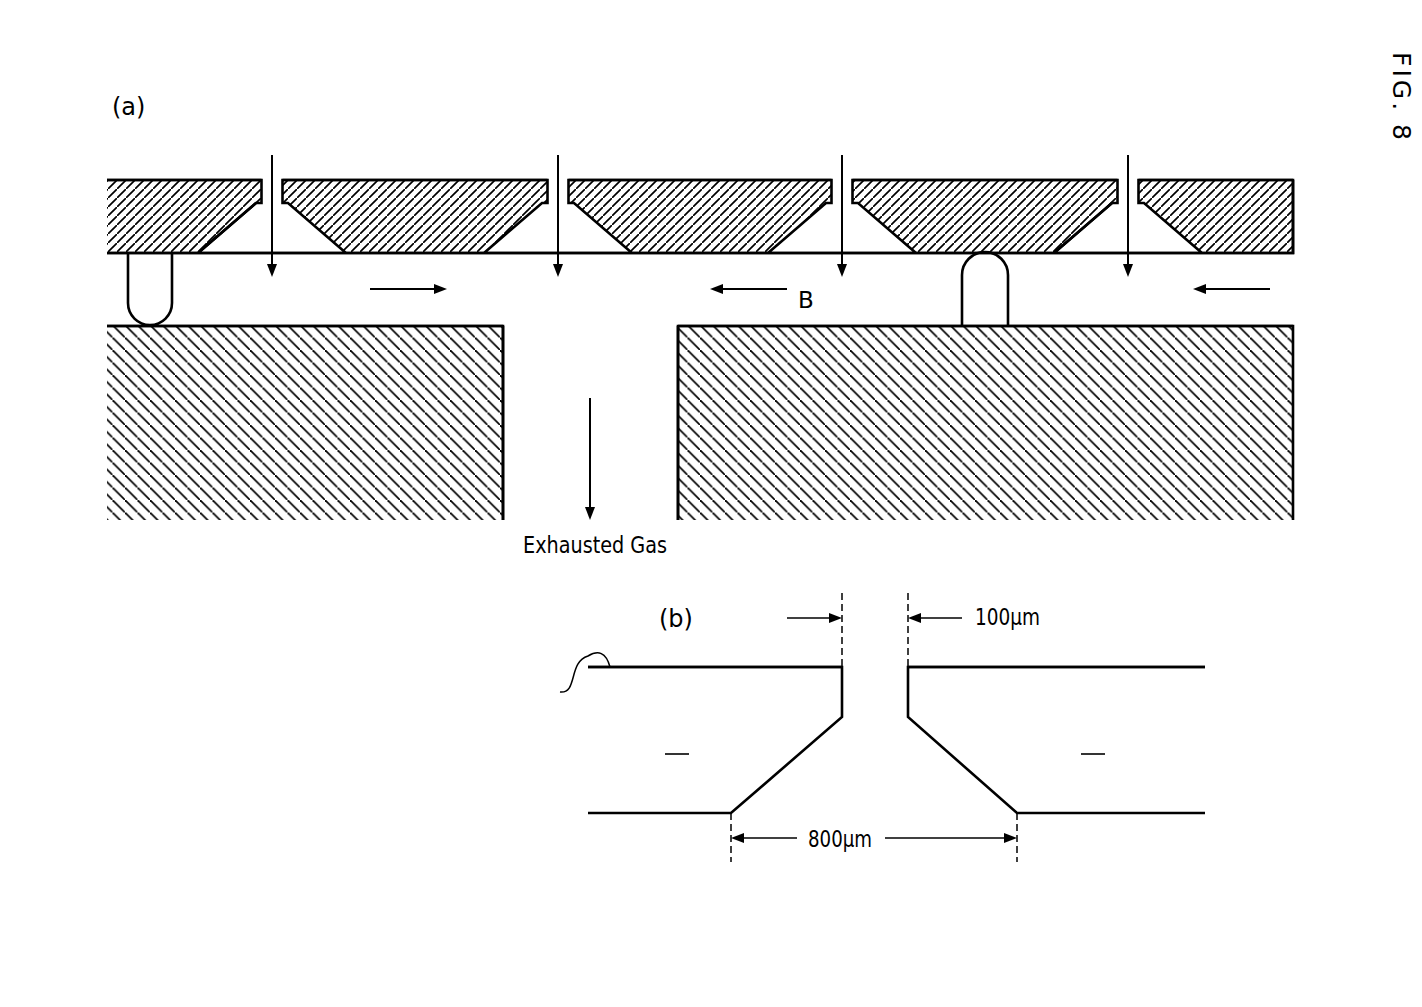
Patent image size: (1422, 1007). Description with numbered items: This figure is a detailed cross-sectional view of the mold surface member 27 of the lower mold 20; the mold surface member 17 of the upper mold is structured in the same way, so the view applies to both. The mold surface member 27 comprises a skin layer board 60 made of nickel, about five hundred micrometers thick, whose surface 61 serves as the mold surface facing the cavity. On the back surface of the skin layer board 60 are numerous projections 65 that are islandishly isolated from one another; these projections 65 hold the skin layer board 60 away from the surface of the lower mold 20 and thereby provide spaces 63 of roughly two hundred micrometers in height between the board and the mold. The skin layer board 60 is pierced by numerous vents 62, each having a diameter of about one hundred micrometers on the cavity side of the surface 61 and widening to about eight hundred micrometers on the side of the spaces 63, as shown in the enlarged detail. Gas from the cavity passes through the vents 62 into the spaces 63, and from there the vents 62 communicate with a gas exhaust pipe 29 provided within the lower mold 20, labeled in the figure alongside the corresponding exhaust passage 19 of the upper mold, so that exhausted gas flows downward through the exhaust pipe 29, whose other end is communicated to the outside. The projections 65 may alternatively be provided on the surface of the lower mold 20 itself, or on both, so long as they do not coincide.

The mold surface member 27 is at (730, 119).
The mold surface member 17 is at (700, 216).
The skin layer board 60 is at (362, 205).
The surface 61 is at (440, 180).
The vent 62 is at (241, 227).
The space 63 is at (229, 291).
The projection 65 is at (143, 283).
The lower mold 20 is at (244, 485).
The gas exhaust pipe 29 is at (557, 461).
The exhaust passage 19 is at (653, 461).